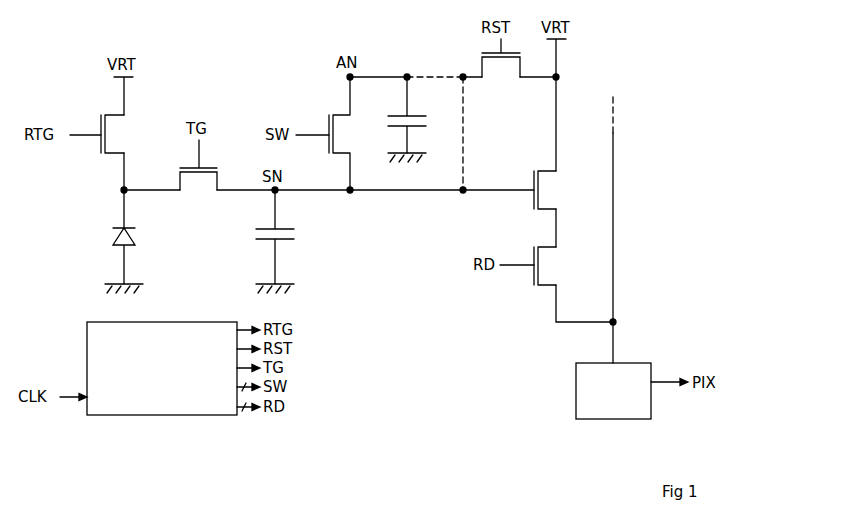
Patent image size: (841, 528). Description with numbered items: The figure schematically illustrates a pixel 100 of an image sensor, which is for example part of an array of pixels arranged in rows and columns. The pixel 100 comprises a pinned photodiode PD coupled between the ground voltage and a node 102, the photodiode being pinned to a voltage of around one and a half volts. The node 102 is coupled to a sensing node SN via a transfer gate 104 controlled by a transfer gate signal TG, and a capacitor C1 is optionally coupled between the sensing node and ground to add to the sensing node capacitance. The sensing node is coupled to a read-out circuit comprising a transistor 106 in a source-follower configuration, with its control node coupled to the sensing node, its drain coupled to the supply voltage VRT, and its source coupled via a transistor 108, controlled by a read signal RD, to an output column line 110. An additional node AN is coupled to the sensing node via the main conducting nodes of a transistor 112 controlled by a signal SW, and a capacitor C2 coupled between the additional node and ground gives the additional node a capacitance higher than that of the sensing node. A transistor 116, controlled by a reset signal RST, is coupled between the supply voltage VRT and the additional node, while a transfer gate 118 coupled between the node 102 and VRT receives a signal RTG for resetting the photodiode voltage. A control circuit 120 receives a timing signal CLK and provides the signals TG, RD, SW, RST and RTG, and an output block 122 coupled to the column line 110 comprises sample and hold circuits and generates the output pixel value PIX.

The pixel 100 is at (612, 55).
The node 102 is at (118, 190).
The transfer gate 104 is at (197, 180).
The transistor 106 is at (546, 192).
The transistor 108 is at (546, 268).
The output column line 110 is at (614, 285).
The transistor 112 is at (337, 135).
The transistor 116 is at (500, 68).
The transfer gate 118 is at (115, 127).
The control circuit 120 is at (197, 328).
The output block 122 is at (580, 375).
The pinned photodiode PD is at (136, 237).
The capacitor C1 is at (295, 234).
The capacitor C2 is at (427, 119).